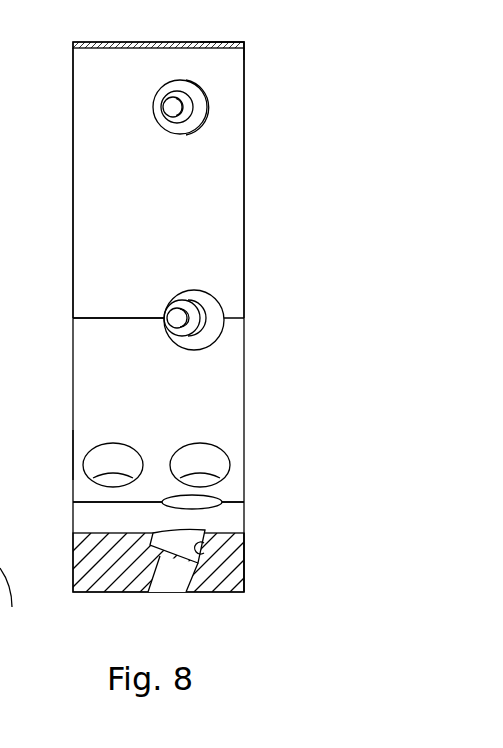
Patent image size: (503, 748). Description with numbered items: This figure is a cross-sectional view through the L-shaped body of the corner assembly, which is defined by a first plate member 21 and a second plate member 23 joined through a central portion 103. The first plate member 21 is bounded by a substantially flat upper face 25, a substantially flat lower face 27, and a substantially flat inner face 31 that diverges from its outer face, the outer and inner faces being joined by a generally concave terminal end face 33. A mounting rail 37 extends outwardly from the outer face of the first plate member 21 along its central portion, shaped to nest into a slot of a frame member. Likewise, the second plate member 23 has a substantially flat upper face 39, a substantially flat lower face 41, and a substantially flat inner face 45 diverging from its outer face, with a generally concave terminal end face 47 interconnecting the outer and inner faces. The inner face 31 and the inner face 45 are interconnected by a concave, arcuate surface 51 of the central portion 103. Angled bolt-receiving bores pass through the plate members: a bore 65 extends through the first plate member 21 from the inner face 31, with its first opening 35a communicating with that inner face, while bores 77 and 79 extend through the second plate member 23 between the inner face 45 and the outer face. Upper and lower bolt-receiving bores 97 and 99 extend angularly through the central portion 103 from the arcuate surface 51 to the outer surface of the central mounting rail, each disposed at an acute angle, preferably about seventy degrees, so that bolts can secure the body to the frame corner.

The first plate member 21 is at (66, 600).
The second plate member 23 is at (240, 40).
The upper face 25 is at (73, 577).
The lower face 27 is at (246, 547).
The inner face 31 is at (73, 532).
The terminal end face 33 is at (14, 602).
The side wall portion 35a is at (36, 455).
The mounting rail 37 is at (185, 592).
The upper face 39 is at (72, 186).
The lower face 41 is at (246, 153).
The inner face 45 is at (141, 174).
The terminal end face 47 is at (137, 42).
The concave arcuate surface 51 is at (156, 409).
The bolt receiving bore 65 is at (205, 548).
The bolt receiving bore 77 is at (208, 100).
The bolt receiving bore 79 is at (206, 309).
The bolt receiving bore 97 is at (108, 447).
The bolt receiving bore 99 is at (195, 447).
The central portion 103 is at (72, 381).